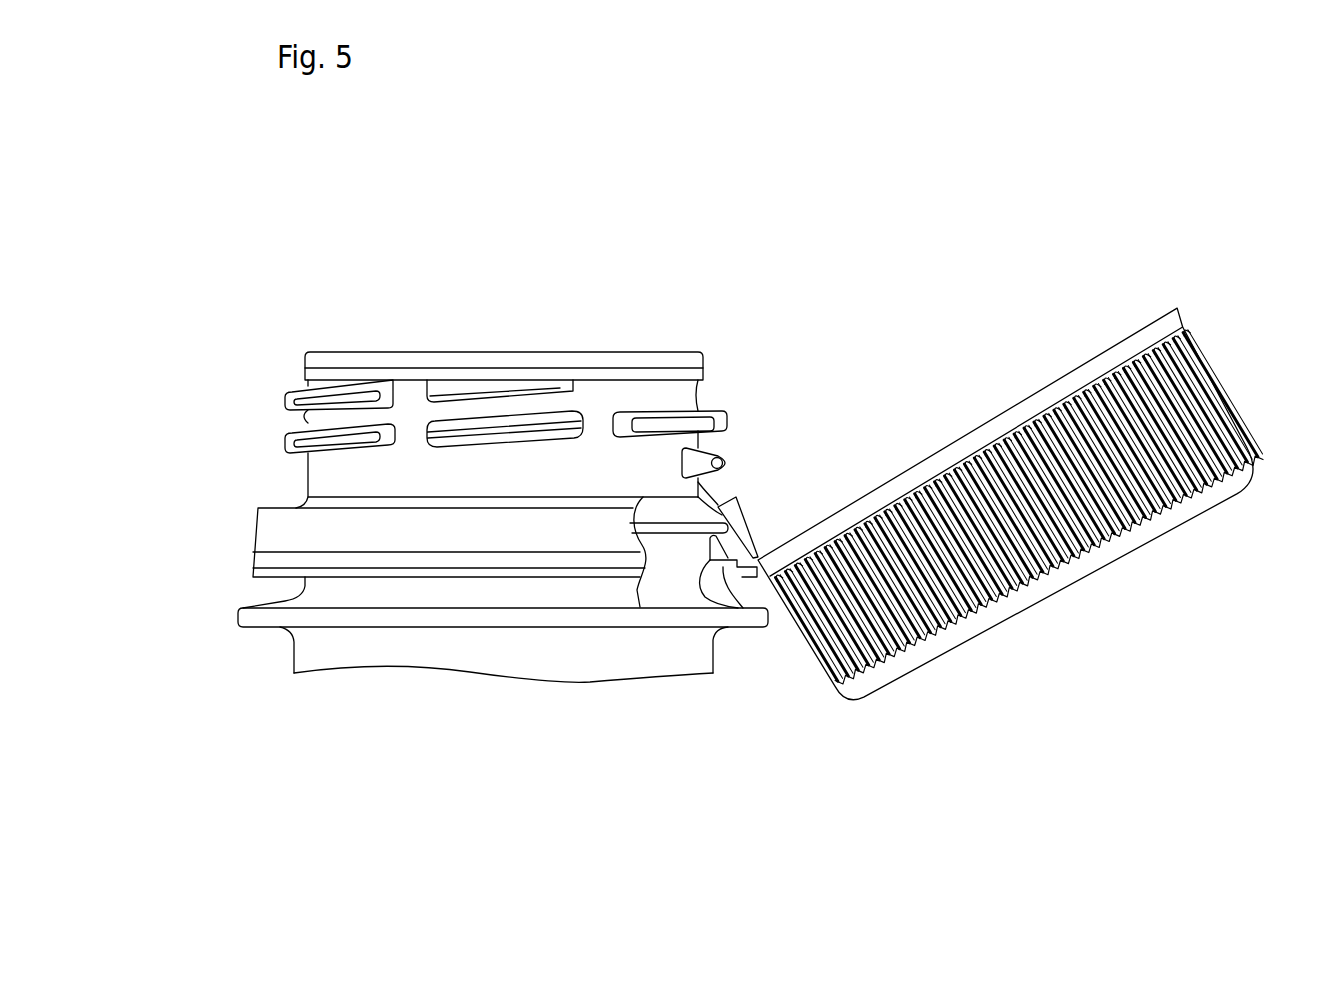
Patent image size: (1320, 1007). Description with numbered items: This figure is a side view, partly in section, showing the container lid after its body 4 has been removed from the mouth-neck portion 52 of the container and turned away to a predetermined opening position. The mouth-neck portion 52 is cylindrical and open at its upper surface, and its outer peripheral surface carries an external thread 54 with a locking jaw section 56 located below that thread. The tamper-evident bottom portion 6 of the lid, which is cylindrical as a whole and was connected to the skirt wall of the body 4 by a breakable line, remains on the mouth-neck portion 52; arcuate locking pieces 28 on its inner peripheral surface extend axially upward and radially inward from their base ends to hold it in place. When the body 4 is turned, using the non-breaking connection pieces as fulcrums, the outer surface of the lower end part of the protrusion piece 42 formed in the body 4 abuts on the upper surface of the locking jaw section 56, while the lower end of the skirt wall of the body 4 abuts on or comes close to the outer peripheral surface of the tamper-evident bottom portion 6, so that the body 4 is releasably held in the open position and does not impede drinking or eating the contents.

The body 4 is at (1082, 597).
The tamper-evident bottom portion 6 is at (250, 525).
The arcuate locking piece 28 is at (722, 565).
The protrusion piece 42 is at (745, 508).
The mouth-neck portion 52 is at (677, 348).
The external thread 54 is at (283, 398).
The locking jaw section 56 is at (704, 512).